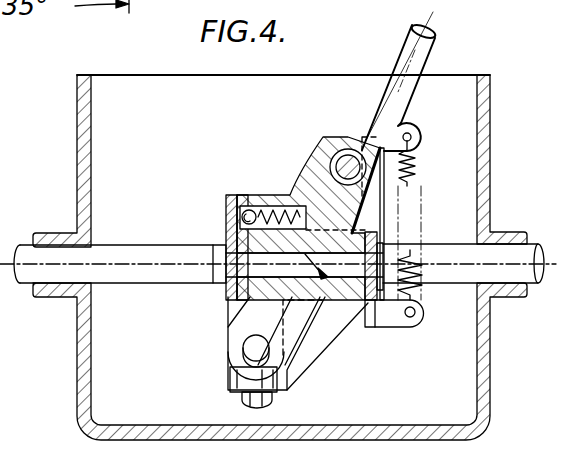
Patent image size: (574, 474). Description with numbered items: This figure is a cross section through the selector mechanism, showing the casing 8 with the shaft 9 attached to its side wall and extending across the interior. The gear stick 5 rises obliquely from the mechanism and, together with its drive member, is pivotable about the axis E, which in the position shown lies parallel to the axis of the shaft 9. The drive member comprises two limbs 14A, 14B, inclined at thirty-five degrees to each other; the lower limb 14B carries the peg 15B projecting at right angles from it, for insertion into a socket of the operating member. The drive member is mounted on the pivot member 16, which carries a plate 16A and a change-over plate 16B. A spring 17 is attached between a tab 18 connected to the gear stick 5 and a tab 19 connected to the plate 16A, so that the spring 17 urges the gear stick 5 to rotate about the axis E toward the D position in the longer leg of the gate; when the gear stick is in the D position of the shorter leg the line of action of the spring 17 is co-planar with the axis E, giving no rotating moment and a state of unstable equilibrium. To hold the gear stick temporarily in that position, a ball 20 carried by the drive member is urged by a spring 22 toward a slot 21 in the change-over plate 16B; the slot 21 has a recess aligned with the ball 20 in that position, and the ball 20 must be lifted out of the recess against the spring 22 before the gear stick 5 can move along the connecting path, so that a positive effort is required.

The gear stick 5 is at (397, 47).
The casing 8 is at (78, 135).
The shaft 9 is at (460, 272).
The limb 14A is at (283, 197).
The limb 14B is at (245, 330).
The peg 15B is at (243, 400).
The pivot member 16 is at (227, 208).
The plate 16A is at (382, 220).
The change-over plate 16B is at (240, 200).
The spring 17 is at (416, 167).
The tab 18 is at (403, 120).
The tab 19 is at (386, 326).
The ball 20 is at (247, 210).
The slot 21 is at (227, 225).
The spring 22 is at (283, 203).
The axis E is at (332, 298).